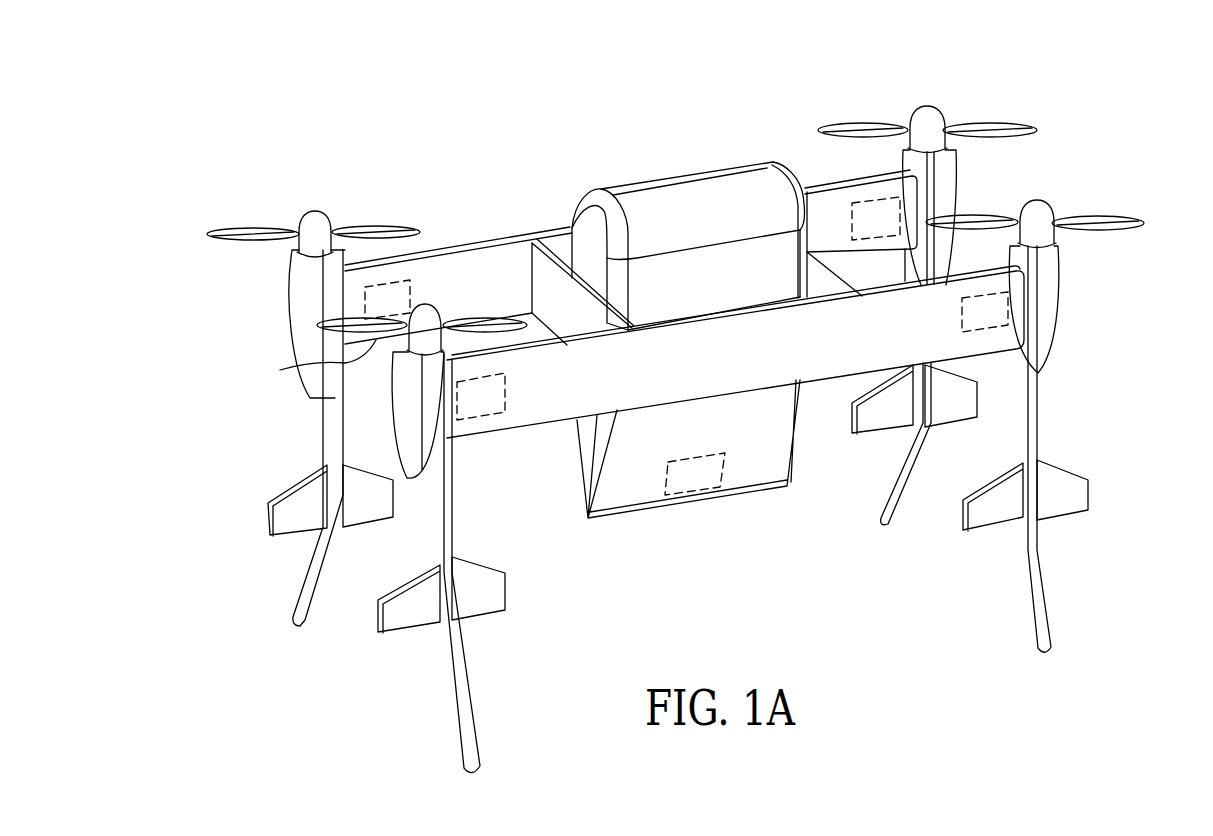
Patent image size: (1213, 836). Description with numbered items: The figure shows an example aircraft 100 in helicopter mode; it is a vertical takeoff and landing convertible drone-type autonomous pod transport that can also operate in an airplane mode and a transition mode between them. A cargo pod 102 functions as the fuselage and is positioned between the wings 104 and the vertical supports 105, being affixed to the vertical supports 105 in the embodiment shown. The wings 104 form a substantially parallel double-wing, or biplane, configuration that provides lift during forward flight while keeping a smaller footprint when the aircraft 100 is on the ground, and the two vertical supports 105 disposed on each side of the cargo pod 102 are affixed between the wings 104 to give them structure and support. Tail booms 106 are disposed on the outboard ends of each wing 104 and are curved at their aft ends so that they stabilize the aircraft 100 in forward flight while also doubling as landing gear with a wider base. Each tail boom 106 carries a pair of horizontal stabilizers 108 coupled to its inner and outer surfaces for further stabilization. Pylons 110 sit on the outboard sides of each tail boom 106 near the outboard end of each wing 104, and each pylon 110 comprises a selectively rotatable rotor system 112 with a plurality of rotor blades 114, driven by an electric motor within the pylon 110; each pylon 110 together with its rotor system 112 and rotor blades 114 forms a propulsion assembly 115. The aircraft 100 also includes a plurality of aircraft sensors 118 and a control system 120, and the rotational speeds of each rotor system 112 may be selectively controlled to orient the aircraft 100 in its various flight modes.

The aircraft 100 is at (538, 96).
The cargo pod 102 is at (667, 178).
The wings 104 is at (544, 237).
The vertical supports 105 is at (598, 327).
The tail booms 106 is at (299, 605).
The horizontal stabilizers 108 is at (283, 525).
The pylons 110 is at (294, 320).
The rotor system 112 is at (314, 205).
The rotor blades 114 is at (220, 228).
The propulsion assembly 115 is at (262, 168).
The aircraft sensors 118 is at (363, 296).
The control system 120 is at (683, 497).